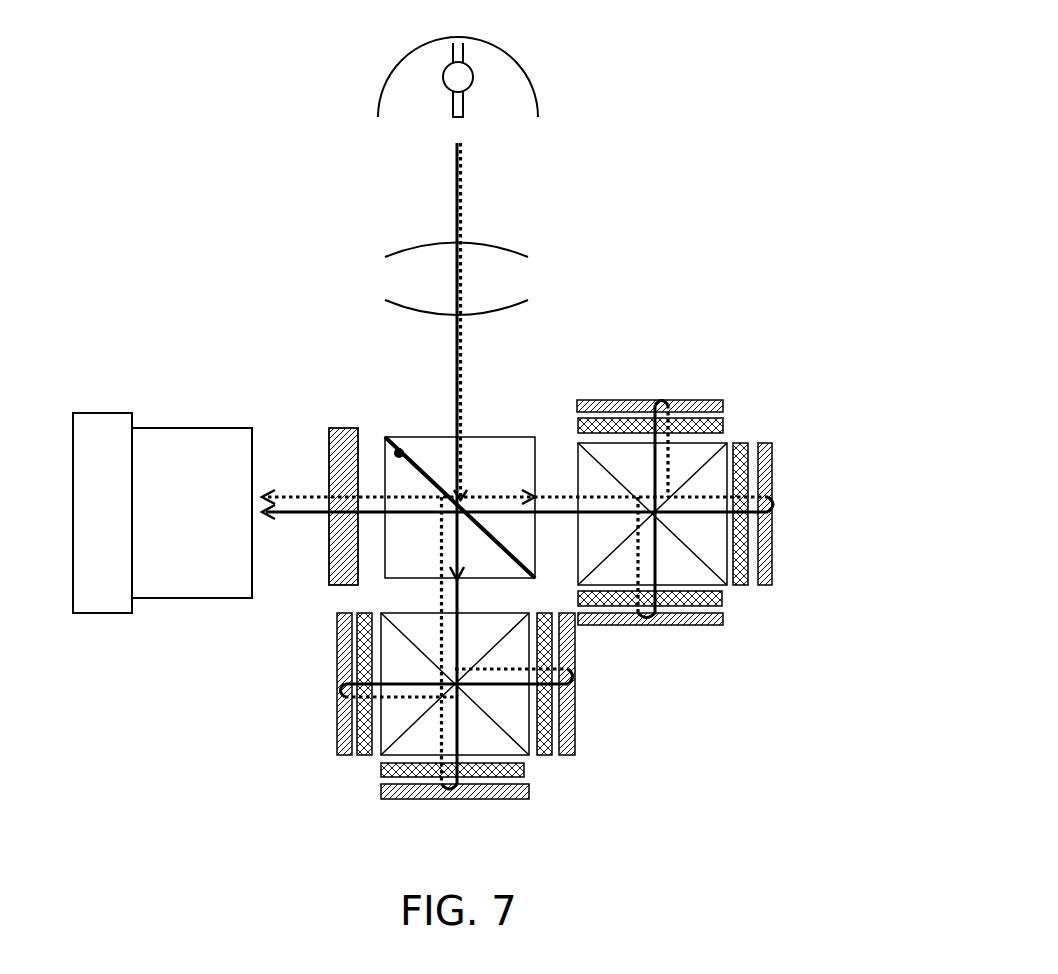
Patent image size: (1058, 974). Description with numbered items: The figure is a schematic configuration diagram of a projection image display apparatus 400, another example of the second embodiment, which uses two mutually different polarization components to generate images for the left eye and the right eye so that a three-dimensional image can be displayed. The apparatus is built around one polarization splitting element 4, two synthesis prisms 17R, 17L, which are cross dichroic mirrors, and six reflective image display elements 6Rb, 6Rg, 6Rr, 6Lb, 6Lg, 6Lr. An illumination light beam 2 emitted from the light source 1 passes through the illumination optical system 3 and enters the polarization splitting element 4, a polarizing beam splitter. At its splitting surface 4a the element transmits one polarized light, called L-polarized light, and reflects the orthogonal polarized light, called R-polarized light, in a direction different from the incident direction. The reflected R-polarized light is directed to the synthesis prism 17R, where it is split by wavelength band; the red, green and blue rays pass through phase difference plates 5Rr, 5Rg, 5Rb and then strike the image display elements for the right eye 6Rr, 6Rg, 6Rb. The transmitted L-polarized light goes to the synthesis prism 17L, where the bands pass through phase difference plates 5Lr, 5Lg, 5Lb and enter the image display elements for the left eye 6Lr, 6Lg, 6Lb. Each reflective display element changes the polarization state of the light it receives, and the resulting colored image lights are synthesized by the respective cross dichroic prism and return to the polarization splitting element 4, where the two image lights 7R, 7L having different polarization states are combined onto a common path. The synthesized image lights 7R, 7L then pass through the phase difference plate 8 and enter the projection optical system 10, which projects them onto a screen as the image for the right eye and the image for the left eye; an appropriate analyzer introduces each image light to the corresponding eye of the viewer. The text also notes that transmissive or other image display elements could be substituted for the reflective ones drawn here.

The projection image display apparatus 400 is at (719, 58).
The light source 1 is at (453, 70).
The illumination light beam 2 is at (457, 208).
The illumination optical system 3 is at (500, 275).
The polarization splitting element 4 is at (519, 445).
The polarization separating surface 4a is at (400, 447).
The image light for the left eye 7L is at (285, 497).
The image light for the right eye 7R is at (408, 512).
The phase difference plate 8 is at (329, 560).
The projection optical system 10 is at (222, 435).
The synthesis prism 17R is at (710, 572).
The synthesis prism 17L is at (515, 730).
The image display element for the right eye 6Rr is at (688, 400).
The phase difference plate 5Rr is at (718, 425).
The phase difference plate 5Rg is at (733, 460).
The image display element for the right eye 6Rg is at (768, 555).
The phase difference plate 5Rb is at (673, 605).
The image display element for the right eye 6Rb is at (605, 627).
The image display element for the left eye 6Lr is at (345, 718).
The phase difference plate 5Lr is at (365, 755).
The phase difference plate 5Lb is at (553, 718).
The image display element for the left eye 6Lb is at (573, 700).
The phase difference plate 5Lg is at (497, 772).
The image display element for the left eye 6Lg is at (415, 800).